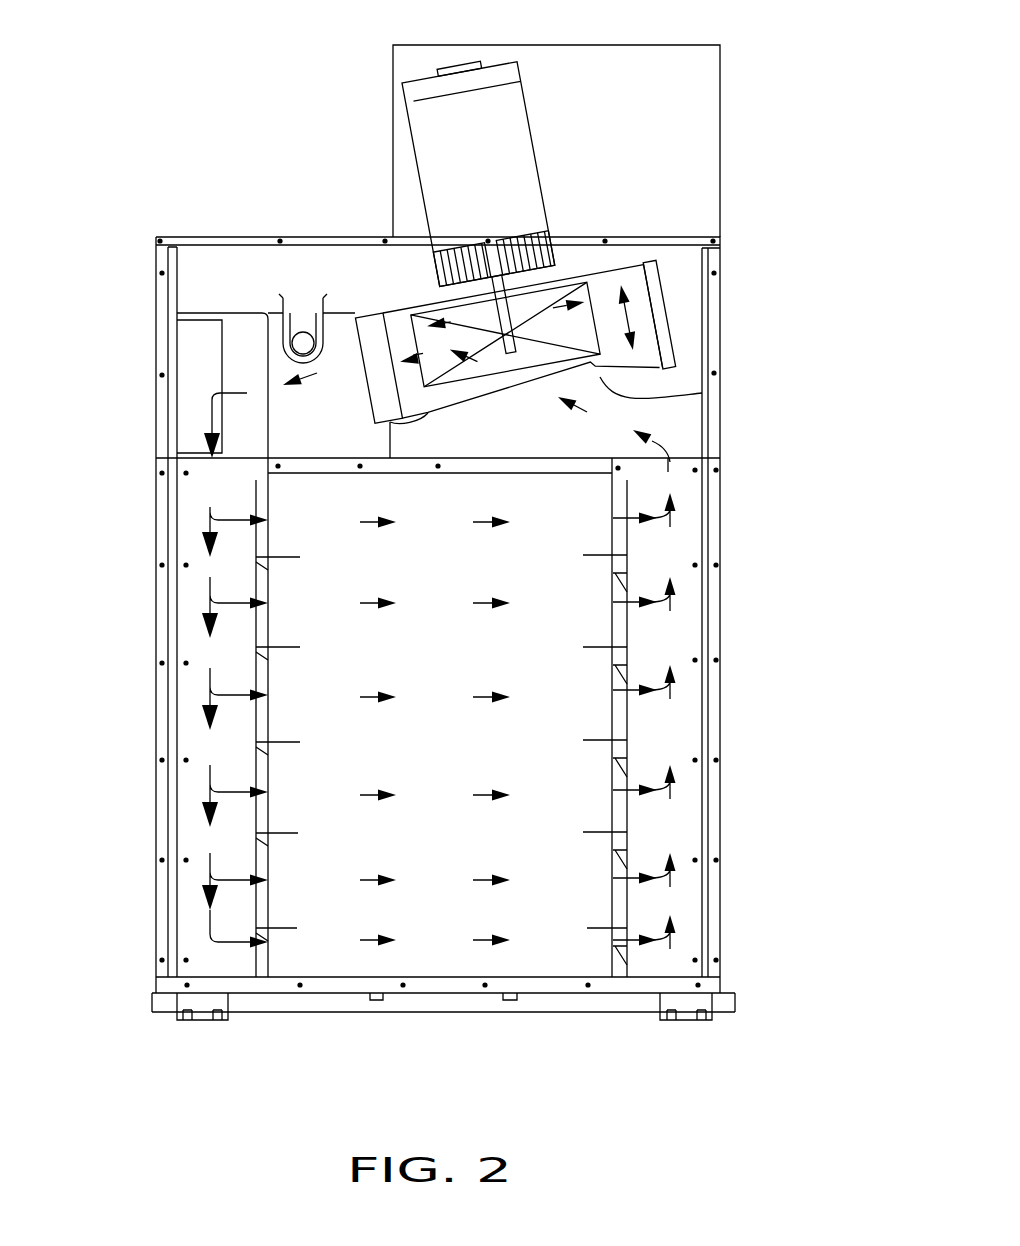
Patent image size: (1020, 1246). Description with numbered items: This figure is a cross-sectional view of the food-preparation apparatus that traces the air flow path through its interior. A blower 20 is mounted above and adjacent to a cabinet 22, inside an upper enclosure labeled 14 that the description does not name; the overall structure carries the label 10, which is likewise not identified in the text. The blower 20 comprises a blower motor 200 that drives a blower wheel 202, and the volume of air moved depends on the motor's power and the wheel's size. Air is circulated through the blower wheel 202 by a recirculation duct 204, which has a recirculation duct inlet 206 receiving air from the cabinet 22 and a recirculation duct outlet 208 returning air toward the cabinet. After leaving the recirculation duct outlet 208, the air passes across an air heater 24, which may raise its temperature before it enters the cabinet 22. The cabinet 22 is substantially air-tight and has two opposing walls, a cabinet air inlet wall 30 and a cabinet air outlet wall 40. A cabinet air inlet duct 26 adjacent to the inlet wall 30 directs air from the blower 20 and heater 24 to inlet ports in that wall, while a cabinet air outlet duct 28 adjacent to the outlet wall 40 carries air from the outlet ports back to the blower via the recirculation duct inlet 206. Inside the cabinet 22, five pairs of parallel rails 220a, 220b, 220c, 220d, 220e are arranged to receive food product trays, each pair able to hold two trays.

The cabinet 10 is at (723, 697).
The blower housing 14 is at (720, 148).
The blower 20 is at (565, 164).
The cabinet 22 is at (463, 650).
The air heater 24 is at (305, 316).
The cabinet air inlet duct 26 is at (198, 580).
The cabinet air outlet duct 28 is at (675, 540).
The cabinet air inlet wall 30 is at (282, 648).
The cabinet air outlet wall 40 is at (613, 632).
The blower motor 200 is at (426, 80).
The blower wheel 202 is at (597, 296).
The recirculation duct 204 is at (672, 325).
The recirculation duct inlet 206 is at (640, 400).
The recirculation duct outlet 208 is at (368, 370).
The pair of parallel rails 220a is at (300, 557).
The pair of parallel rails 220b is at (300, 647).
The pair of parallel rails 220c is at (300, 742).
The pair of parallel rails 220d is at (298, 833).
The pair of parallel rails 220e is at (297, 928).